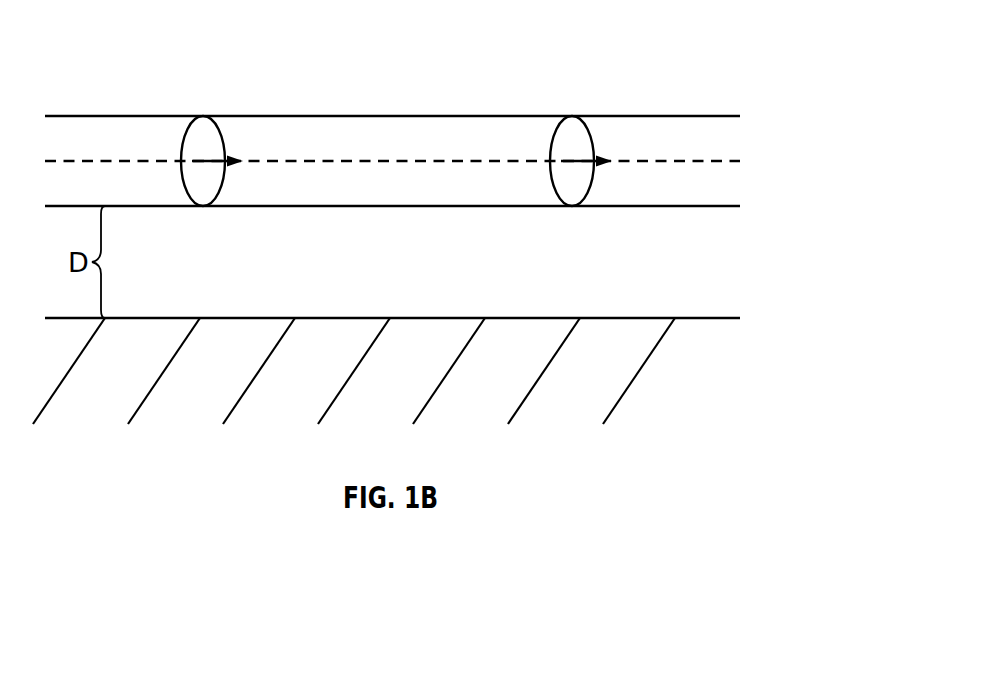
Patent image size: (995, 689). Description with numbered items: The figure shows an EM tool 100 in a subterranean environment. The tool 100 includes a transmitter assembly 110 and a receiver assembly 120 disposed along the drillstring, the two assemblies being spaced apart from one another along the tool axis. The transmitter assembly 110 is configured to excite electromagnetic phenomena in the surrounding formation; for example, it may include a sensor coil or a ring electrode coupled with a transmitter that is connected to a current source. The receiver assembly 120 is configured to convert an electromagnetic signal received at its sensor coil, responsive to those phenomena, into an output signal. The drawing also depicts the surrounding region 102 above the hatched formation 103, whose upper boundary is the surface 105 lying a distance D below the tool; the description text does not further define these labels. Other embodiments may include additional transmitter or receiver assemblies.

The EM tool 100 is at (706, 35).
The fluid medium / channel region 102 is at (413, 45).
The substrate 103 is at (413, 391).
The substrate surface 105 is at (640, 314).
The transmitter assembly 110 is at (212, 119).
The receiver assembly 120 is at (581, 119).